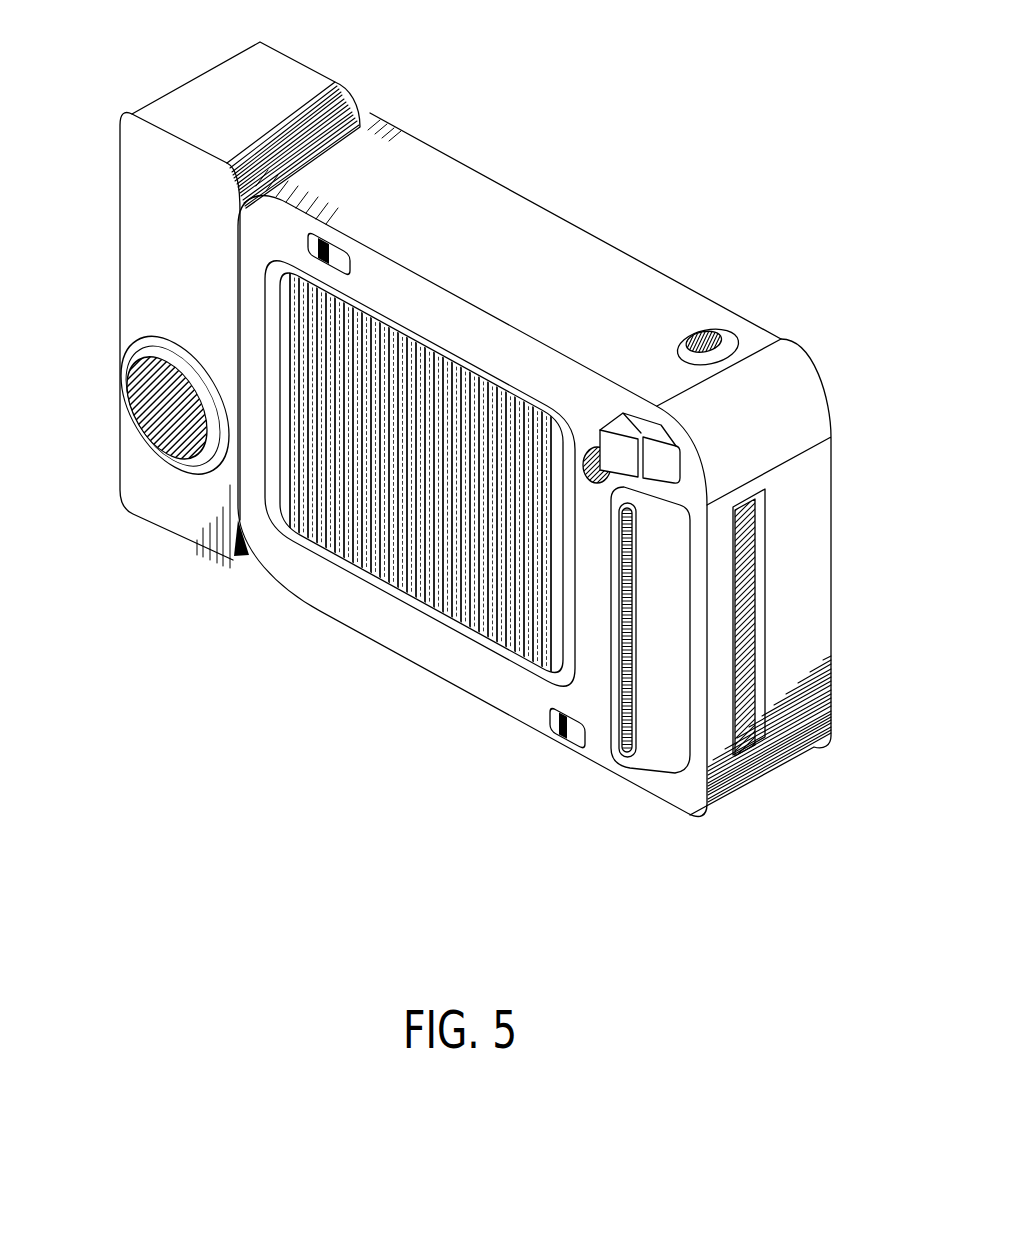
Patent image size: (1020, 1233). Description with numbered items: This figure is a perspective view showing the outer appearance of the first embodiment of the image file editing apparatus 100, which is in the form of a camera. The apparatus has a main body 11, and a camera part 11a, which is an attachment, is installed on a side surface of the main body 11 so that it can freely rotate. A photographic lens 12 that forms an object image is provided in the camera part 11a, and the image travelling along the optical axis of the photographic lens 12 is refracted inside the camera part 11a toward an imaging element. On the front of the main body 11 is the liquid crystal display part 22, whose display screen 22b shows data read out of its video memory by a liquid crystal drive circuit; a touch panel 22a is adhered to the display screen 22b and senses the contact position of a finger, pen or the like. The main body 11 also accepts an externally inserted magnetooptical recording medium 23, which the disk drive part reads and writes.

The image file editing apparatus 100 is at (518, 137).
The main body 11 is at (557, 243).
The camera part 11a is at (297, 80).
The photographic lens 12 is at (167, 417).
The liquid crystal display part 22 is at (372, 548).
The touch panel 22a is at (487, 590).
The display screen 22b is at (440, 560).
The magnetooptical recording medium 23 is at (753, 603).